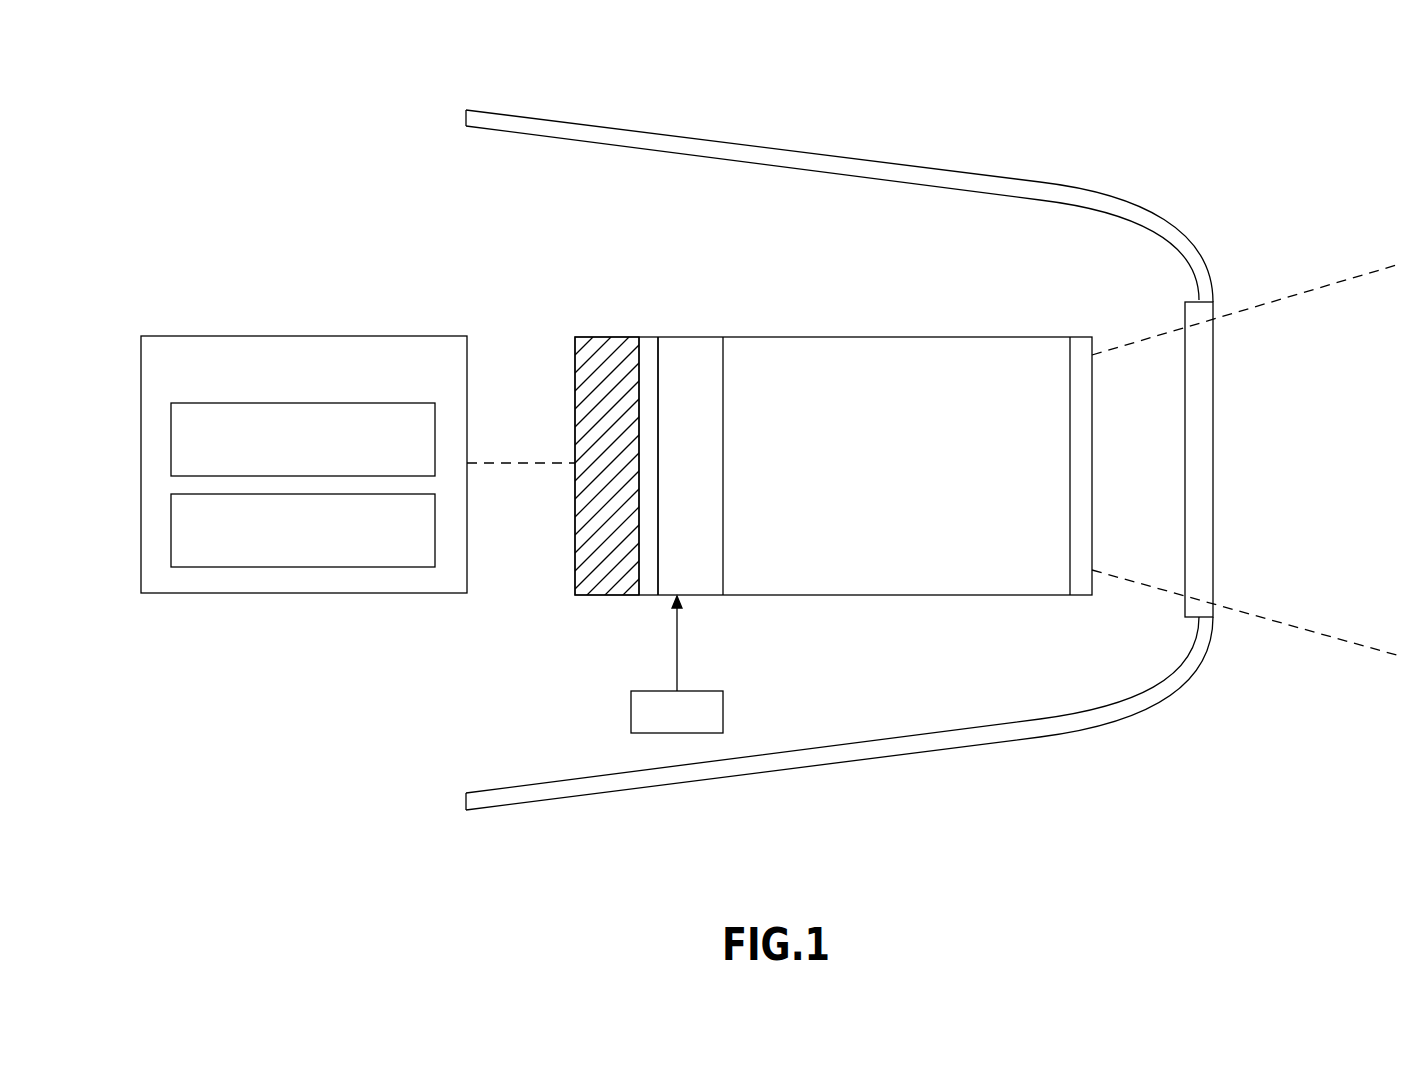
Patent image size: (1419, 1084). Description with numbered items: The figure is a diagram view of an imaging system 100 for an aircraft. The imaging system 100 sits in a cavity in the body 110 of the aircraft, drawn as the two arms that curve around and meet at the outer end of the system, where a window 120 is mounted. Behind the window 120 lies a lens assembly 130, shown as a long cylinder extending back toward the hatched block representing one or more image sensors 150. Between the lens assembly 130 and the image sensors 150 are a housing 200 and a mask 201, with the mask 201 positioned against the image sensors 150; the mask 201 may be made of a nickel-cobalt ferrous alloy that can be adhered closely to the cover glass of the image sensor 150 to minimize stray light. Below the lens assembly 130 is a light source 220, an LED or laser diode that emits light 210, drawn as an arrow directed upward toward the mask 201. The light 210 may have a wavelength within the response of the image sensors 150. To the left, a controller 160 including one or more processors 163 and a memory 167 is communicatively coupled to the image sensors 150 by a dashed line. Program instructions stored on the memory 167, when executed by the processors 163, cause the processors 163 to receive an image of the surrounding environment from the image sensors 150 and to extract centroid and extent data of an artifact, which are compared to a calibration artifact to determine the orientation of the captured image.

The imaging system 100 is at (282, 84).
The body 110 is at (468, 108).
The window 120 is at (1214, 407).
The lens assembly 130 is at (853, 337).
The image sensors 150 is at (598, 337).
The housing 200 is at (675, 337).
The mask 201 is at (650, 597).
The light 210 is at (677, 640).
The light source 220 is at (631, 712).
The controller 160 is at (184, 363).
The processors 163 is at (213, 429).
The memory 167 is at (213, 519).